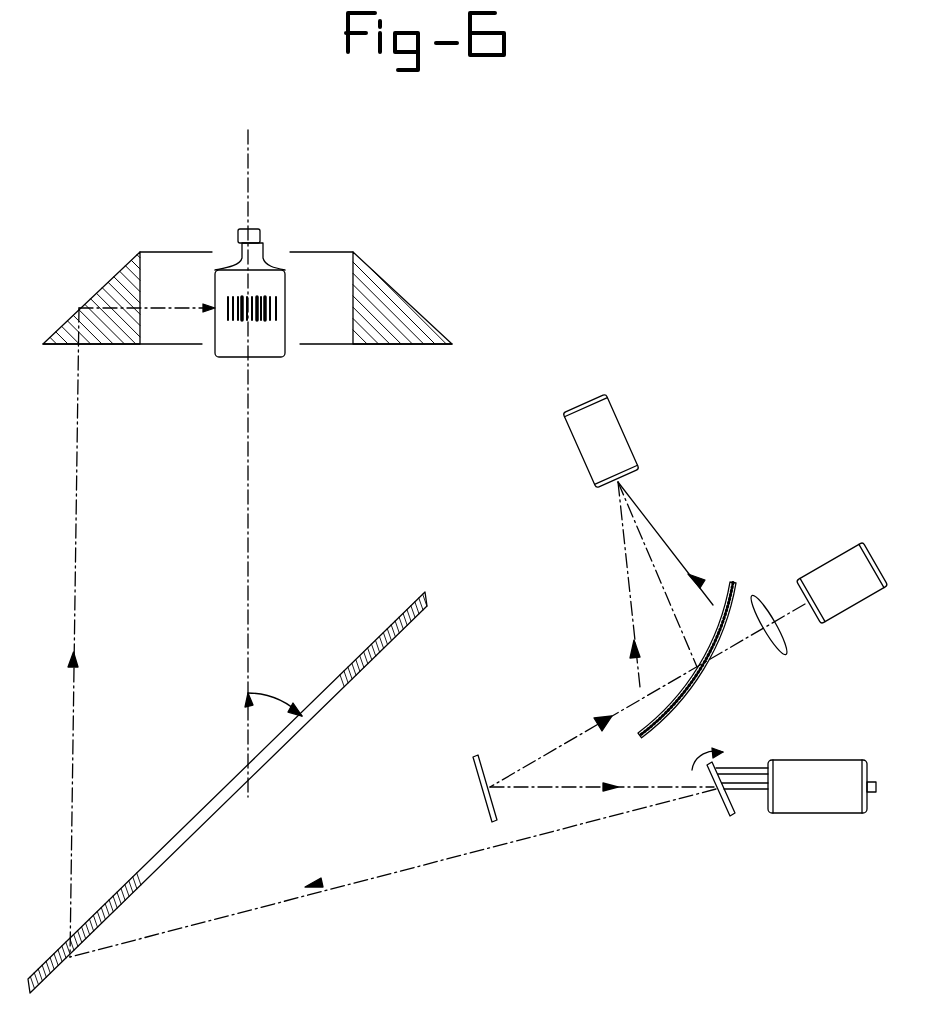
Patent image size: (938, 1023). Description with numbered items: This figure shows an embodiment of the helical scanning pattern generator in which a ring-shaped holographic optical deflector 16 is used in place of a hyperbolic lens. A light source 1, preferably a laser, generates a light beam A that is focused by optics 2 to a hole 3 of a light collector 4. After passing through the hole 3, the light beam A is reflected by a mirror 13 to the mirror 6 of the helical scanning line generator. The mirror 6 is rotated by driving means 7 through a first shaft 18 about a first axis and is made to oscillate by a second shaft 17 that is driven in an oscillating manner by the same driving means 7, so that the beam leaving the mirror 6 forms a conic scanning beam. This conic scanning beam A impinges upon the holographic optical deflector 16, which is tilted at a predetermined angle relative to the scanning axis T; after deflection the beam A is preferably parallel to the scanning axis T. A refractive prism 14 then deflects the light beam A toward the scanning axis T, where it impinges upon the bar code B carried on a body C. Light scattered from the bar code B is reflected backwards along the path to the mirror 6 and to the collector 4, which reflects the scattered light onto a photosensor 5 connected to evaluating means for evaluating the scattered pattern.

The light source 1 is at (843, 570).
The optics 2 is at (771, 615).
The hole 3 is at (687, 665).
The light collector 4 is at (672, 710).
The photosensor 5 is at (605, 435).
The mirror 6 is at (727, 810).
The driving means 7 is at (818, 773).
The mirror 13 is at (475, 770).
The refractive prism 14 is at (407, 297).
The ring-shaped holographic optical deflector 16 is at (384, 631).
The second shaft 17 is at (745, 768).
The first shaft 18 is at (748, 790).
The light beam A is at (602, 718).
The bar code B is at (267, 300).
The body C is at (233, 345).
The scanning axis T is at (259, 463).